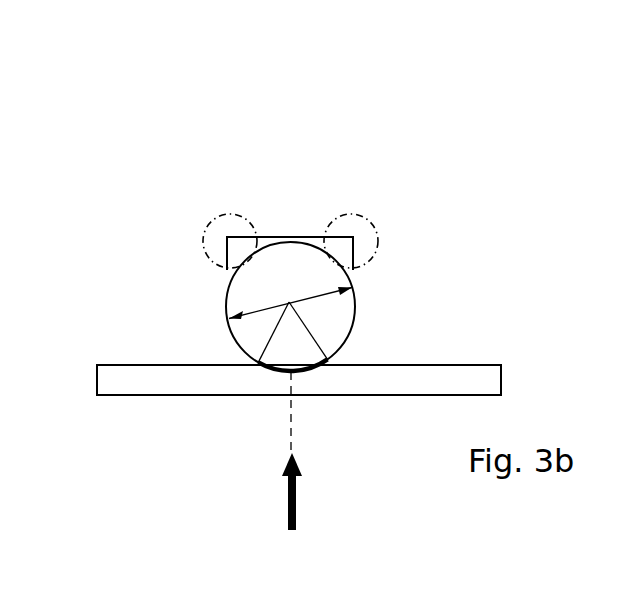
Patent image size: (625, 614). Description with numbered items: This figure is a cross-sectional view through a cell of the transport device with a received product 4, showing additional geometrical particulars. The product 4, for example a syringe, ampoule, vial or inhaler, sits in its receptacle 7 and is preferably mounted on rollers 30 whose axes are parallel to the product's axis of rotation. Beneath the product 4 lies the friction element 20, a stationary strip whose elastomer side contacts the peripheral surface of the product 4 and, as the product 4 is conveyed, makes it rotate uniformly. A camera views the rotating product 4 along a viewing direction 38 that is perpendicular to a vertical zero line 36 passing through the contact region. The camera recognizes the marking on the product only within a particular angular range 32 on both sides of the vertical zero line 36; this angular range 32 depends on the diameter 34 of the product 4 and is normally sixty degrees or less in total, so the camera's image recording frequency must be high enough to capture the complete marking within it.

The product 4 is at (258, 280).
The receptacle 7 is at (317, 245).
The friction element 20 is at (448, 377).
The rollers 30 is at (218, 237).
The angular range 32 is at (287, 353).
The diameter 34 is at (302, 300).
The vertical zero line 36 is at (293, 370).
The viewing direction 38 is at (297, 487).